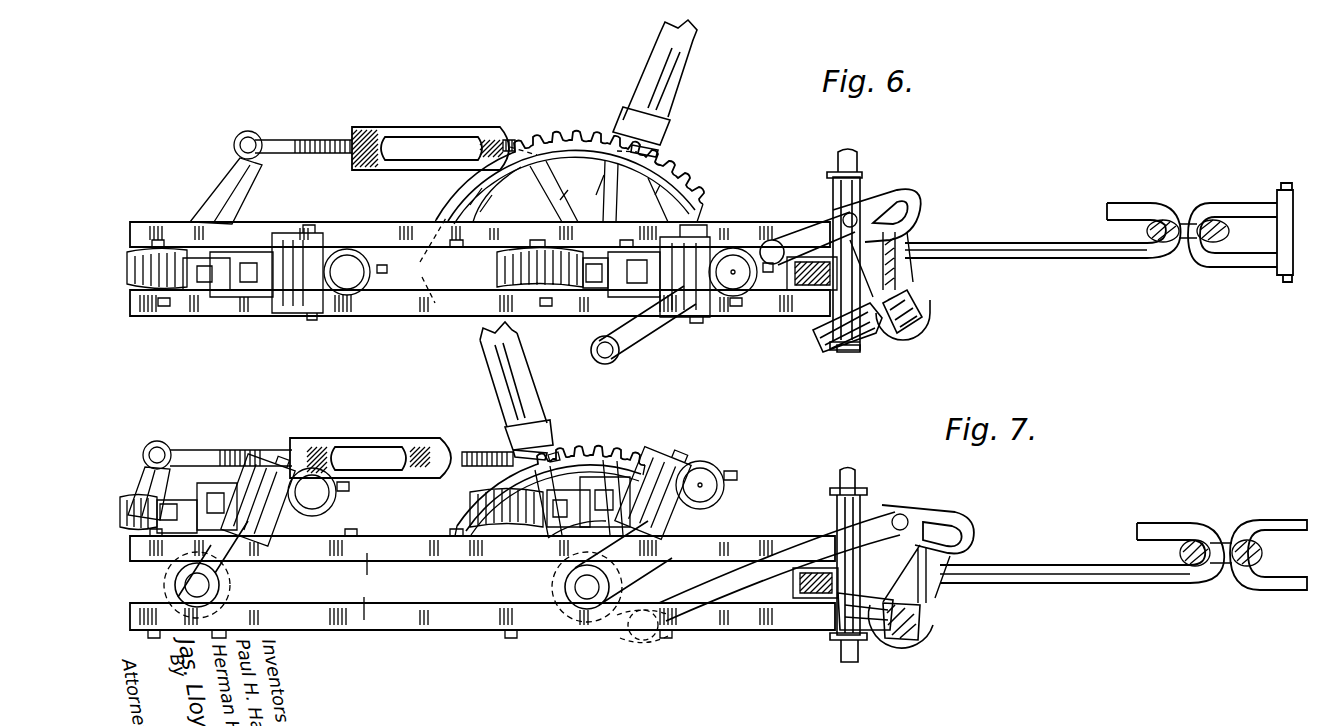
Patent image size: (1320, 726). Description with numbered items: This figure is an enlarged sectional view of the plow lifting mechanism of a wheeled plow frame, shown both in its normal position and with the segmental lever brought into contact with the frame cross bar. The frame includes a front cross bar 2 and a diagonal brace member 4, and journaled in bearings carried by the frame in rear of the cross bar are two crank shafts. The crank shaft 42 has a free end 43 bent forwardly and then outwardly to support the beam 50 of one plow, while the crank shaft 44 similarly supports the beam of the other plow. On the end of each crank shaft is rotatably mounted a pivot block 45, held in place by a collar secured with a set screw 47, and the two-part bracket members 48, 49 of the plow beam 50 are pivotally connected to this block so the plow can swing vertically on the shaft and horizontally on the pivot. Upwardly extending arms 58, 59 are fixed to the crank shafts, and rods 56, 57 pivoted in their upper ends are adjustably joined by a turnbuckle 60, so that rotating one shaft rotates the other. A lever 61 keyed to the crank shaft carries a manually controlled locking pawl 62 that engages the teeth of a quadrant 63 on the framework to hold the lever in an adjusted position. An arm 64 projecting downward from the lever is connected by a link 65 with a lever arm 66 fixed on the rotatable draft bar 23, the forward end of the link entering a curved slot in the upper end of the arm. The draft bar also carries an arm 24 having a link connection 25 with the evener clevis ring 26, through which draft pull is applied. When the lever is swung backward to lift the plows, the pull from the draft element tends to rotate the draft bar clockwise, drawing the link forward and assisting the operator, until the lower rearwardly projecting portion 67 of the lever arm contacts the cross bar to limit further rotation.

In FIG. 6, the front cross bar 2 is at (815, 286).
In FIG. 7, the front cross bar 2 is at (793, 600).
In FIG. 6, the diagonal brace member 4 is at (407, 232).
In FIG. 7, the diagonal brace member 4 is at (316, 618).
In FIG. 6, the draft bar 23 is at (930, 312).
In FIG. 7, the draft bar 23 is at (928, 634).
In FIG. 6, the arm 24 is at (912, 240).
In FIG. 7, the arm 24 is at (940, 600).
In FIG. 6, the link connection 25 is at (1048, 254).
In FIG. 7, the link connection 25 is at (1101, 568).
In FIG. 6, the evener clevis ring 26 is at (1188, 247).
In FIG. 7, the evener clevis ring 26 is at (1222, 572).
In FIG. 7, the crank shaft 42 is at (590, 596).
In FIG. 6, the free end of crank shaft 43 is at (733, 280).
In FIG. 7, the free end of crank shaft 43 is at (702, 478).
In FIG. 6, the crank shaft 44 is at (207, 290).
In FIG. 7, the crank shaft 44 is at (222, 548).
In FIG. 6, the pivot block 45 is at (312, 262).
In FIG. 7, the pivot block 45 is at (280, 468).
In FIG. 6, the set screw 47 is at (362, 288).
In FIG. 7, the set screw 47 is at (345, 491).
In FIG. 6, the bracket member 48 is at (246, 297).
In FIG. 7, the bracket member 48 is at (583, 490).
In FIG. 6, the bracket member 49 is at (300, 313).
In FIG. 7, the bracket member 49 is at (651, 460).
In FIG. 6, the plow beam 50 is at (143, 250).
In FIG. 7, the plow beam 50 is at (138, 498).
In FIG. 6, the rod 56 is at (510, 137).
In FIG. 7, the rod 56 is at (490, 452).
In FIG. 6, the rod 57 is at (320, 139).
In FIG. 7, the rod 57 is at (228, 450).
In FIG. 7, the upwardly extending arm 58 is at (553, 453).
In FIG. 6, the upwardly extending arm 59 is at (228, 168).
In FIG. 7, the upwardly extending arm 59 is at (160, 441).
In FIG. 6, the turnbuckle 60 is at (435, 126).
In FIG. 7, the turnbuckle 60 is at (385, 438).
In FIG. 6, the lever 61 is at (685, 65).
In FIG. 7, the lever 61 is at (481, 341).
In FIG. 6, the locking pawl 62 is at (653, 120).
In FIG. 7, the locking pawl 62 is at (507, 374).
In FIG. 6, the quadrant 63 is at (676, 160).
In FIG. 7, the quadrant 63 is at (607, 453).
In FIG. 6, the arm 64 is at (592, 303).
In FIG. 7, the arm 64 is at (643, 640).
In FIG. 6, the link 65 is at (632, 349).
In FIG. 7, the link 65 is at (798, 557).
In FIG. 6, the lever arm 66 is at (892, 338).
In FIG. 7, the lever arm 66 is at (970, 553).
In FIG. 6, the rearwardly projecting portion 67 is at (835, 332).
In FIG. 7, the rearwardly projecting portion 67 is at (840, 608).